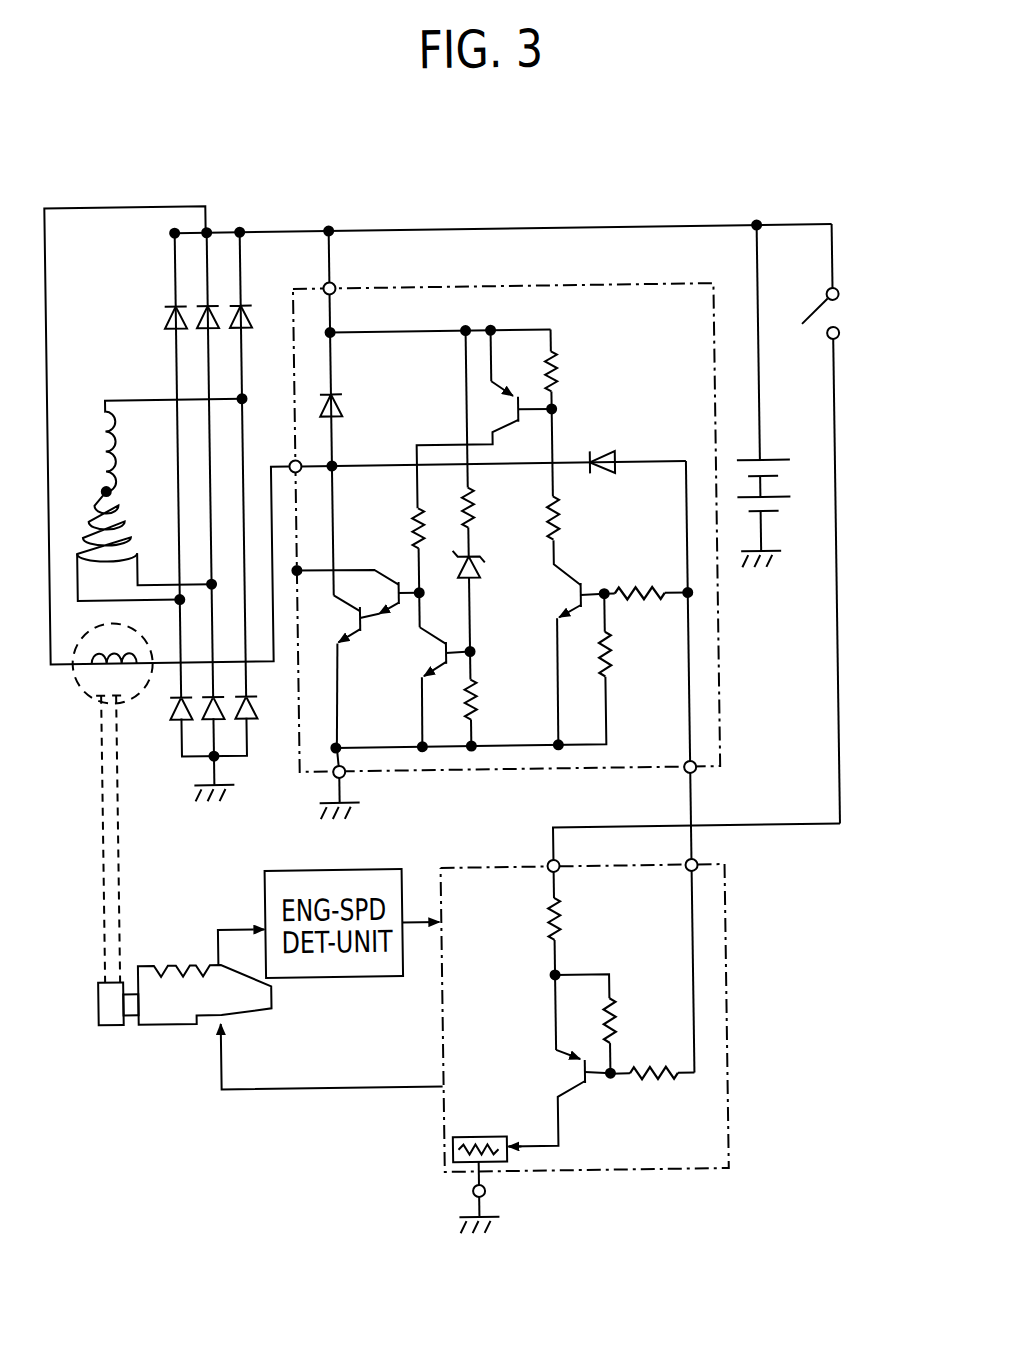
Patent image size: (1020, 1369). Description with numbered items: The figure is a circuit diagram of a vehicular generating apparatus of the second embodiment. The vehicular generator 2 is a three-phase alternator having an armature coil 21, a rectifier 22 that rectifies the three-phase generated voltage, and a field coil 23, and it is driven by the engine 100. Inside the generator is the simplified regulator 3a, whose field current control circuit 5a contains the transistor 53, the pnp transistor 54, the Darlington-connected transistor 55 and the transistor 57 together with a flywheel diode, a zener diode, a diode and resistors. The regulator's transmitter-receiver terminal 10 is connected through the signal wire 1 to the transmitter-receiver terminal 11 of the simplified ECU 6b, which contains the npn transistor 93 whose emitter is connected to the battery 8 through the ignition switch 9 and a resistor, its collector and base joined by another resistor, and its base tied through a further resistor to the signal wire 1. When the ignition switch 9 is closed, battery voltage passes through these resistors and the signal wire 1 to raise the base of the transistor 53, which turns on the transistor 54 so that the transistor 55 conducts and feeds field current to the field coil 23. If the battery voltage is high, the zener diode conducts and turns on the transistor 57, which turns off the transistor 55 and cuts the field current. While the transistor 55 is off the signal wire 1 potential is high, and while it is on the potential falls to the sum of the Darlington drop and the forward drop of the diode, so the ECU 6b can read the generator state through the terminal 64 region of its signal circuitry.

The signal wire 1 is at (686, 797).
The vehicular generator 2 is at (443, 578).
The armature coil 21 is at (92, 469).
The rectifier 22 is at (231, 221).
The field coil 23 is at (98, 683).
The simplified regulator 3a is at (531, 284).
The field current control circuit 5a is at (481, 491).
The simplified ECU 6b is at (723, 997).
The battery 8 is at (777, 464).
The ignition switch 9 is at (834, 320).
The transmitter-receiver terminal 10 is at (684, 765).
The transmitter-receiver terminal 11 is at (684, 875).
The transistor 53 is at (566, 592).
The pnp transistor 54 is at (505, 419).
The Darlington-connected transistor 55 is at (360, 637).
The transistor 57 is at (440, 667).
The FR signal terminal 64 is at (446, 1148).
The npn transistor 93 is at (570, 1087).
The engine 100 is at (167, 1014).